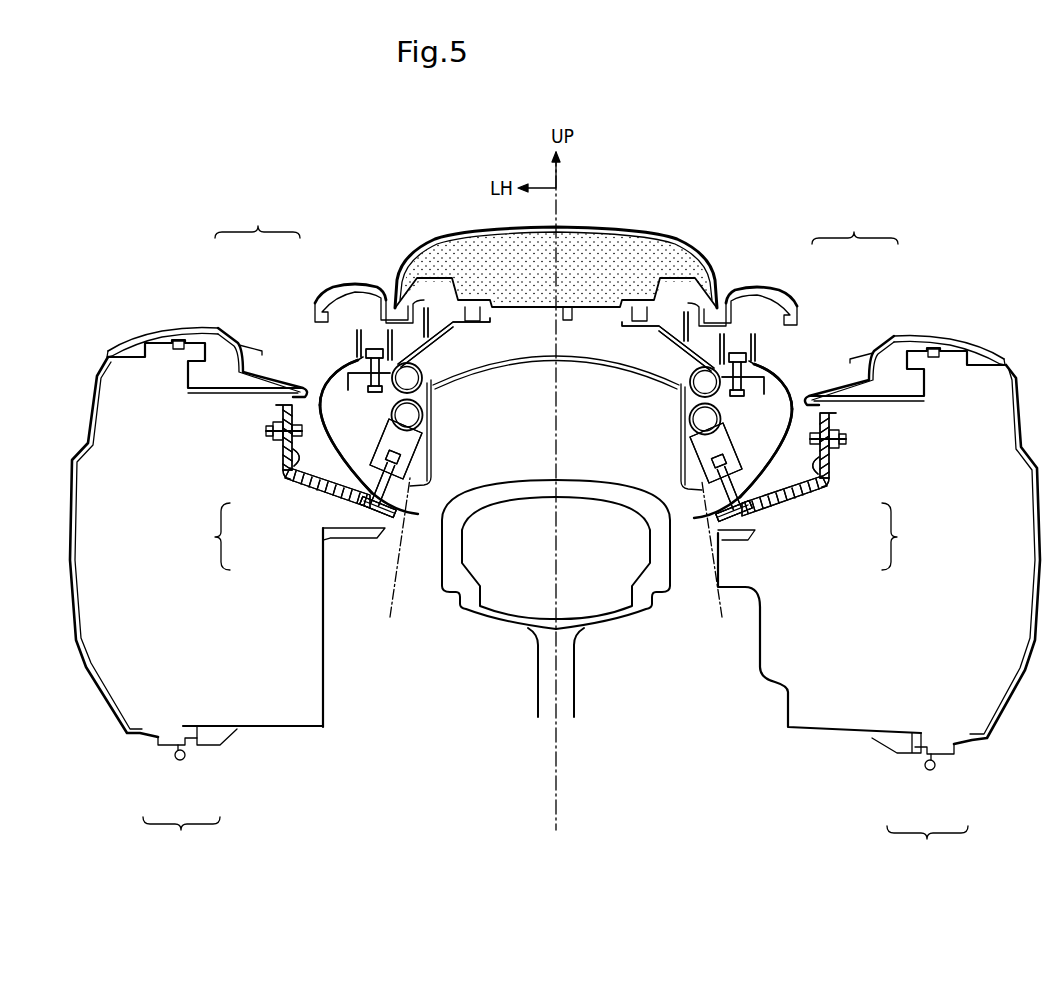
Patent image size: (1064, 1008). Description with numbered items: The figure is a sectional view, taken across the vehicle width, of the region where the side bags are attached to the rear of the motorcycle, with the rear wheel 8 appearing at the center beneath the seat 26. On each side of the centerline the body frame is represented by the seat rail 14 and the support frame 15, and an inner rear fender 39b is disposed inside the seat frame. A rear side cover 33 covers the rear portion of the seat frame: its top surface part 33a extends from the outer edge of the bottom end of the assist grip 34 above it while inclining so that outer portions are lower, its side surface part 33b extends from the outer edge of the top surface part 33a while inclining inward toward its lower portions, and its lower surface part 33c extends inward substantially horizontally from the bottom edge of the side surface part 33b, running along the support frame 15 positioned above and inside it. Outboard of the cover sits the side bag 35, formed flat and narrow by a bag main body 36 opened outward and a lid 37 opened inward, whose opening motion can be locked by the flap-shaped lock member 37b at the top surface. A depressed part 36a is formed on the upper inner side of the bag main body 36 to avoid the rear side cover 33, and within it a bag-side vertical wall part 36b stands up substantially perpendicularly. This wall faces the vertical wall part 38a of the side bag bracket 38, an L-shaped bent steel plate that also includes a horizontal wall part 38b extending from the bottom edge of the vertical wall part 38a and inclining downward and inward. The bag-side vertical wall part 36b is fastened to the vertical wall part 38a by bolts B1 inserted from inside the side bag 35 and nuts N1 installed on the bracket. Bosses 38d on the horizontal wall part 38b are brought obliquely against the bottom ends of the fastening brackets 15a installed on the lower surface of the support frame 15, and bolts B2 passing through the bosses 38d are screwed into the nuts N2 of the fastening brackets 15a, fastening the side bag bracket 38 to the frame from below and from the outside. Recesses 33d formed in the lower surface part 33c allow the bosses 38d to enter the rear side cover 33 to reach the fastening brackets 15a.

The rear wheel 8 is at (531, 482).
The seat rail 14 is at (425, 393).
The support frame 15 is at (428, 428).
The fastening bracket 15a is at (410, 458).
The seat 26 is at (625, 232).
The rear side cover 33 is at (556, 349).
The top surface part 33a is at (345, 368).
The side surface part 33b is at (322, 415).
The lower surface part 33c is at (566, 559).
The recess 33d is at (556, 505).
The assist grip 34 is at (340, 287).
The side bag 35 is at (555, 840).
The bag main body 36 is at (244, 730).
The depressed part 36a is at (328, 490).
The bag-side vertical wall part 36b is at (292, 394).
The lid 37 is at (145, 737).
The lock member 37b is at (165, 330).
The side bag bracket 38 is at (556, 487).
The vertical wall part 38a is at (297, 487).
The horizontal wall part 38b is at (345, 505).
The boss 38d is at (322, 560).
The inner rear fender 39b is at (626, 377).
The bolt B1 is at (272, 437).
The bolt B2 is at (376, 520).
The nut N1 is at (270, 430).
The nut N2 is at (405, 479).